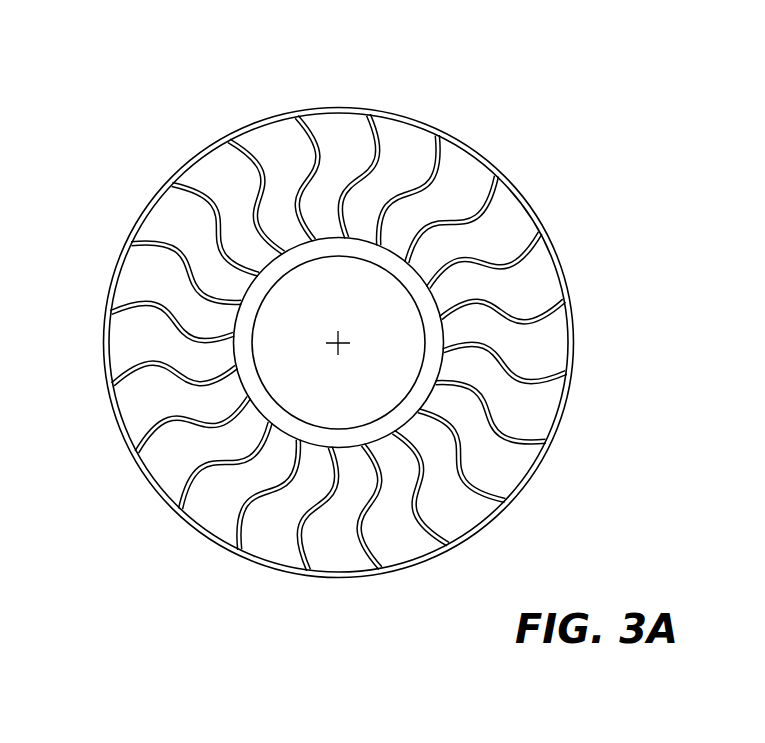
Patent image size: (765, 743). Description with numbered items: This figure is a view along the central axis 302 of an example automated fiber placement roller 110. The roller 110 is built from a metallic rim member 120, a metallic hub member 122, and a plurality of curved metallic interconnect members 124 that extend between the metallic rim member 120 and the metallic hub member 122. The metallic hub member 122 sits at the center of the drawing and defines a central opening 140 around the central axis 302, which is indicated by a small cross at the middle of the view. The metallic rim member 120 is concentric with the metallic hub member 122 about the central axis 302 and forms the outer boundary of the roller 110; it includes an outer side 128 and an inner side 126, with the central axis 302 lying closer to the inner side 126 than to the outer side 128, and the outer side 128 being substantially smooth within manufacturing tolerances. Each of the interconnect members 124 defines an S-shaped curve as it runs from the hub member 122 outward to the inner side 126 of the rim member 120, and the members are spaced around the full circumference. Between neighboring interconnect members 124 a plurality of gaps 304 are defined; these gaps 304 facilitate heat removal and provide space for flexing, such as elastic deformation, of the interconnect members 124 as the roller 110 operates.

The automated fiber placement roller 110 is at (306, 295).
The metallic rim member 120 is at (330, 343).
The metallic hub member 122 is at (363, 343).
The curved metallic interconnect members 124 is at (323, 317).
The inner side 126 is at (220, 166).
The outer side 128 is at (180, 150).
The central opening 140 is at (399, 376).
The central axis 302 is at (335, 337).
The gaps 304 is at (252, 531).